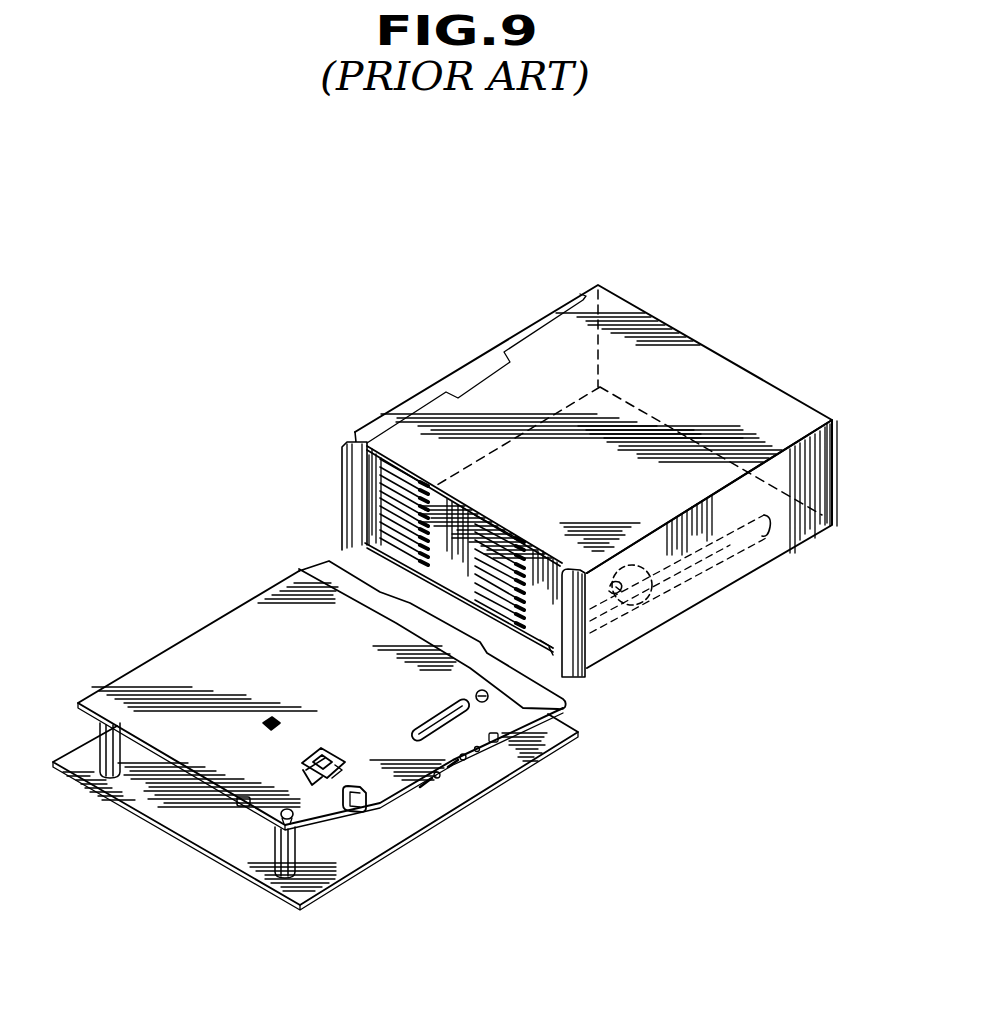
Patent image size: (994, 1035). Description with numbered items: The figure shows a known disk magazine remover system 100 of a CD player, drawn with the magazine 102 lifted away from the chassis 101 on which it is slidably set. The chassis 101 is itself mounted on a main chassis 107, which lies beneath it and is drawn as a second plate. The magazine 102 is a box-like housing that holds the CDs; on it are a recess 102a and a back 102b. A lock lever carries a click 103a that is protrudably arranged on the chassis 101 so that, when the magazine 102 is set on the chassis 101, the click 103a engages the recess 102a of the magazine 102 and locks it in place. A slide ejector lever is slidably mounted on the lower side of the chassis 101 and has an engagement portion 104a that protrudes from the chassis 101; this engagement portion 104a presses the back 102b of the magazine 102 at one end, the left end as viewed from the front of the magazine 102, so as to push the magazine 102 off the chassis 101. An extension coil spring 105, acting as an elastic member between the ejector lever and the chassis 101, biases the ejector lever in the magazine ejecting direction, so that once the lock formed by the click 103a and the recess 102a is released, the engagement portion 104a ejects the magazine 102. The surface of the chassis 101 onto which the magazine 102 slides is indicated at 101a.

The disk magazine remover system 100 is at (523, 779).
The chassis 101 is at (398, 797).
The upper surface of printed circuit board 101a is at (168, 663).
The magazine 102 is at (751, 580).
The recess 102a is at (652, 600).
The back 102b is at (550, 613).
The click 103a is at (338, 786).
The engagement portion 104a is at (352, 787).
The extension coil spring 105 is at (470, 760).
The main chassis 107 is at (222, 838).